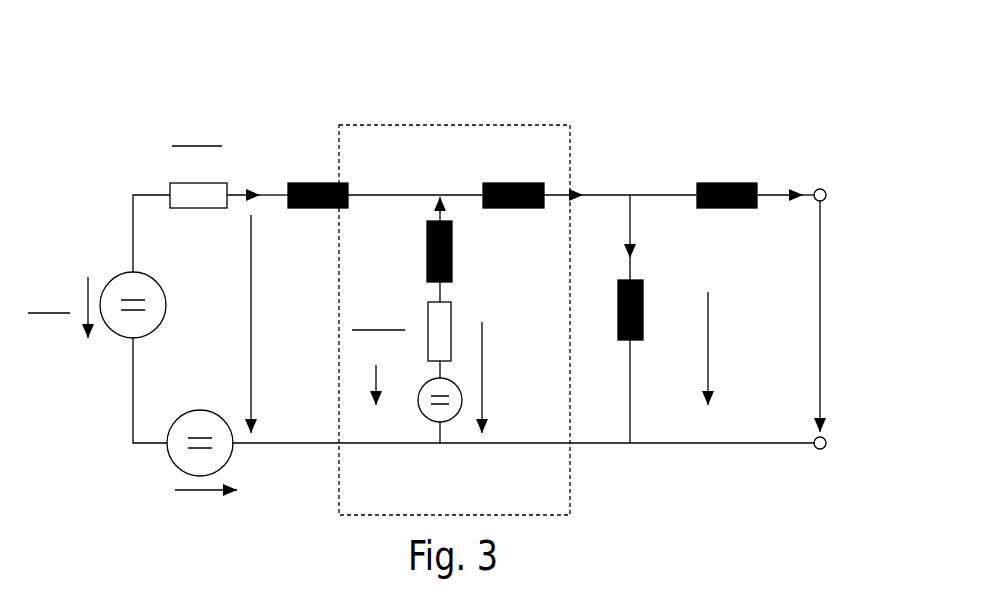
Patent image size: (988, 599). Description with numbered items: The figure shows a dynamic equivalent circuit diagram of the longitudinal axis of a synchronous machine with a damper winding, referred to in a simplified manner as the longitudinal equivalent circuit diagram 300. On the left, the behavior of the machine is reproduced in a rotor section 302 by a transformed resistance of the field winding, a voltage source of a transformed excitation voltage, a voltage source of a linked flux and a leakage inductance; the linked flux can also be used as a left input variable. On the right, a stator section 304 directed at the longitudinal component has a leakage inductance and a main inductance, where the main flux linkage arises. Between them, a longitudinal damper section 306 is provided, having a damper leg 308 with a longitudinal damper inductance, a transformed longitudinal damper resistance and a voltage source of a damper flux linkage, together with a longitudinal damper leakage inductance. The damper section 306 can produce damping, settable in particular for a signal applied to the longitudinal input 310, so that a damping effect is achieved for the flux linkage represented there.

The longitudinal equivalent circuit diagram 300 is at (732, 93).
The rotor section 302 is at (133, 113).
The stator section 304 is at (845, 170).
The longitudinal damper section 306 is at (455, 125).
The damper leg 308 is at (484, 309).
The longitudinal input 310 is at (854, 270).